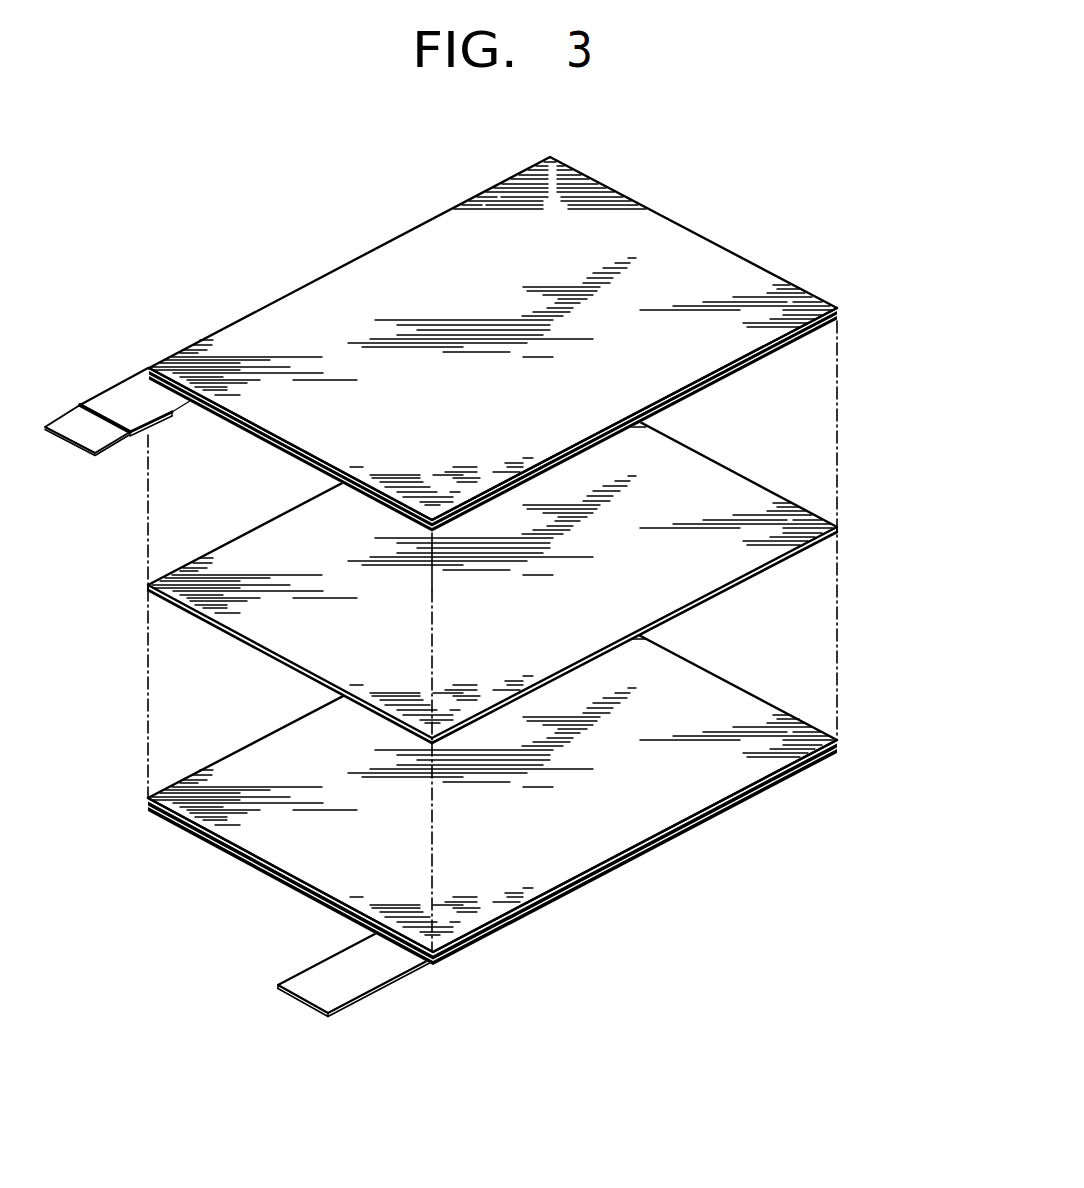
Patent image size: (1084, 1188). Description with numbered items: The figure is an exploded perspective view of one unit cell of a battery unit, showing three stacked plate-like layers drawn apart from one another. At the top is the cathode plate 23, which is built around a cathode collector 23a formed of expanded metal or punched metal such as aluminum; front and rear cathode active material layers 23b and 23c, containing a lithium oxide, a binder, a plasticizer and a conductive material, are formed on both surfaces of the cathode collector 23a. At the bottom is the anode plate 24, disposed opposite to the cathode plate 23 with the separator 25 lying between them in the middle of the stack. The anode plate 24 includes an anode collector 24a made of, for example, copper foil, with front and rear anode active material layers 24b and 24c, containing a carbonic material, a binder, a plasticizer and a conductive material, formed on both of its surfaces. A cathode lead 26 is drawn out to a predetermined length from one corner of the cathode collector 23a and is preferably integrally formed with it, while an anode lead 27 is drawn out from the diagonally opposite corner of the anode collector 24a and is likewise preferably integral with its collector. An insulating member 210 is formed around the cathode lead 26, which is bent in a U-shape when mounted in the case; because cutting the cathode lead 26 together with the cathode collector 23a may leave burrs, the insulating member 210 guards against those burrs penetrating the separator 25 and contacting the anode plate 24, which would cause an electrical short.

The cathode plate 23 is at (558, 344).
The cathode collector 23a is at (840, 314).
The front cathode active material layer 23b is at (838, 319).
The rear cathode active material layer 23c is at (915, 358).
The anode plate 24 is at (557, 776).
The anode collector 24a is at (840, 746).
The front anode active material layer 24b is at (915, 790).
The rear anode active material layer 24c is at (838, 753).
The separator 25 is at (750, 484).
The cathode lead 26 is at (80, 422).
The anode lead 27 is at (298, 982).
The insulating member 210 is at (120, 393).